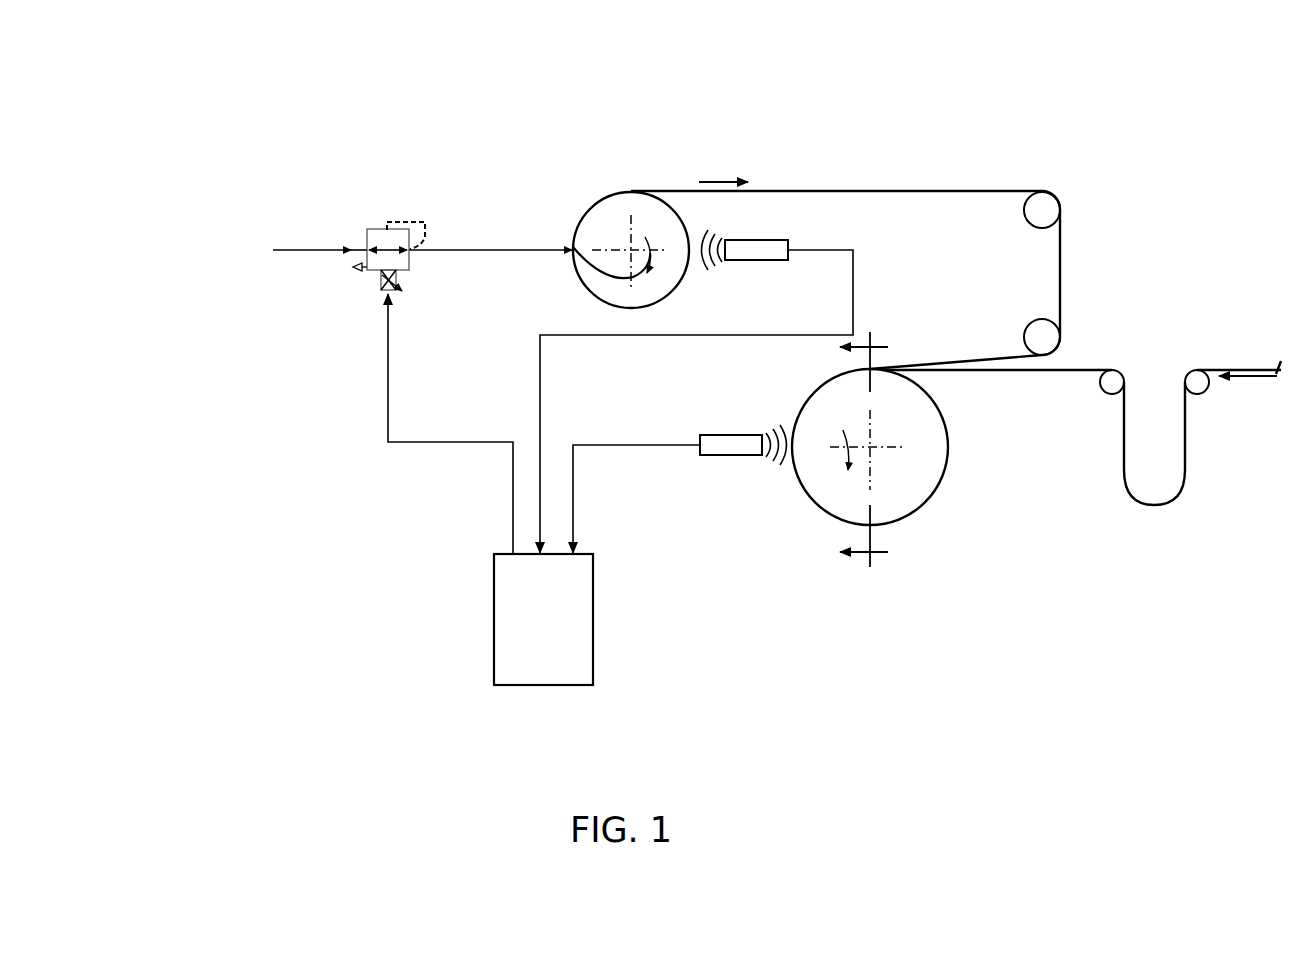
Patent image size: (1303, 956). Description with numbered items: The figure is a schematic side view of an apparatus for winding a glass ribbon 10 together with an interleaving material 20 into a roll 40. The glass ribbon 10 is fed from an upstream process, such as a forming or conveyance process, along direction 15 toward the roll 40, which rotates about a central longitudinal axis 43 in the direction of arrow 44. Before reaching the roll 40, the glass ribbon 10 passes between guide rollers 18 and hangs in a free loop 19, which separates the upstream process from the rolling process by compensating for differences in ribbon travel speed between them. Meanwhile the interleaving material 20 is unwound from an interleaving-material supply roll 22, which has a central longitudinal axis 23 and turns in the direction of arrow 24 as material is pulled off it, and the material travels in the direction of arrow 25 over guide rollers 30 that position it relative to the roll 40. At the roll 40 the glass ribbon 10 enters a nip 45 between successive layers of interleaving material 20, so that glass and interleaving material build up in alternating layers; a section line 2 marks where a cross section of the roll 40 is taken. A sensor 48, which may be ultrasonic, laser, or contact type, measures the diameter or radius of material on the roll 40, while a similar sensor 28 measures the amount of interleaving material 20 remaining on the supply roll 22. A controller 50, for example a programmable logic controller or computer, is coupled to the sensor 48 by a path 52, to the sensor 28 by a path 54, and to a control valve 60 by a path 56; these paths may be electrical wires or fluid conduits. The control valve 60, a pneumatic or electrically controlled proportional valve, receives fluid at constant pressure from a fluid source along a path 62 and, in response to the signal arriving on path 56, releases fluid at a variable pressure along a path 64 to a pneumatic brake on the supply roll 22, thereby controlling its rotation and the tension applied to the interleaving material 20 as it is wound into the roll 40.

The glass ribbon 10 is at (1238, 368).
The direction 15 is at (1248, 390).
The rollers 18 is at (1113, 382).
The free loop 19 is at (1179, 514).
The interleaving material 20 is at (890, 193).
The interleaving-material supply roll 22 is at (586, 180).
The central longitudinal axis 23 is at (633, 247).
The arrow 24 is at (573, 247).
The arrow 25 is at (723, 169).
The sensor 28 is at (768, 250).
The rollers 30 is at (1042, 337).
The roll 40 is at (919, 540).
The central longitudinal axis 43 is at (870, 447).
The arrow 44 is at (845, 458).
The nip 45 is at (910, 374).
The sensor 48 is at (727, 450).
The controller 50 is at (527, 633).
The path 52 is at (573, 487).
The path 54 is at (542, 400).
The path 56 is at (388, 388).
The control valve 60 is at (376, 222).
The path 62 is at (317, 247).
The path 64 is at (503, 247).
The line 2- 2 is at (854, 449).